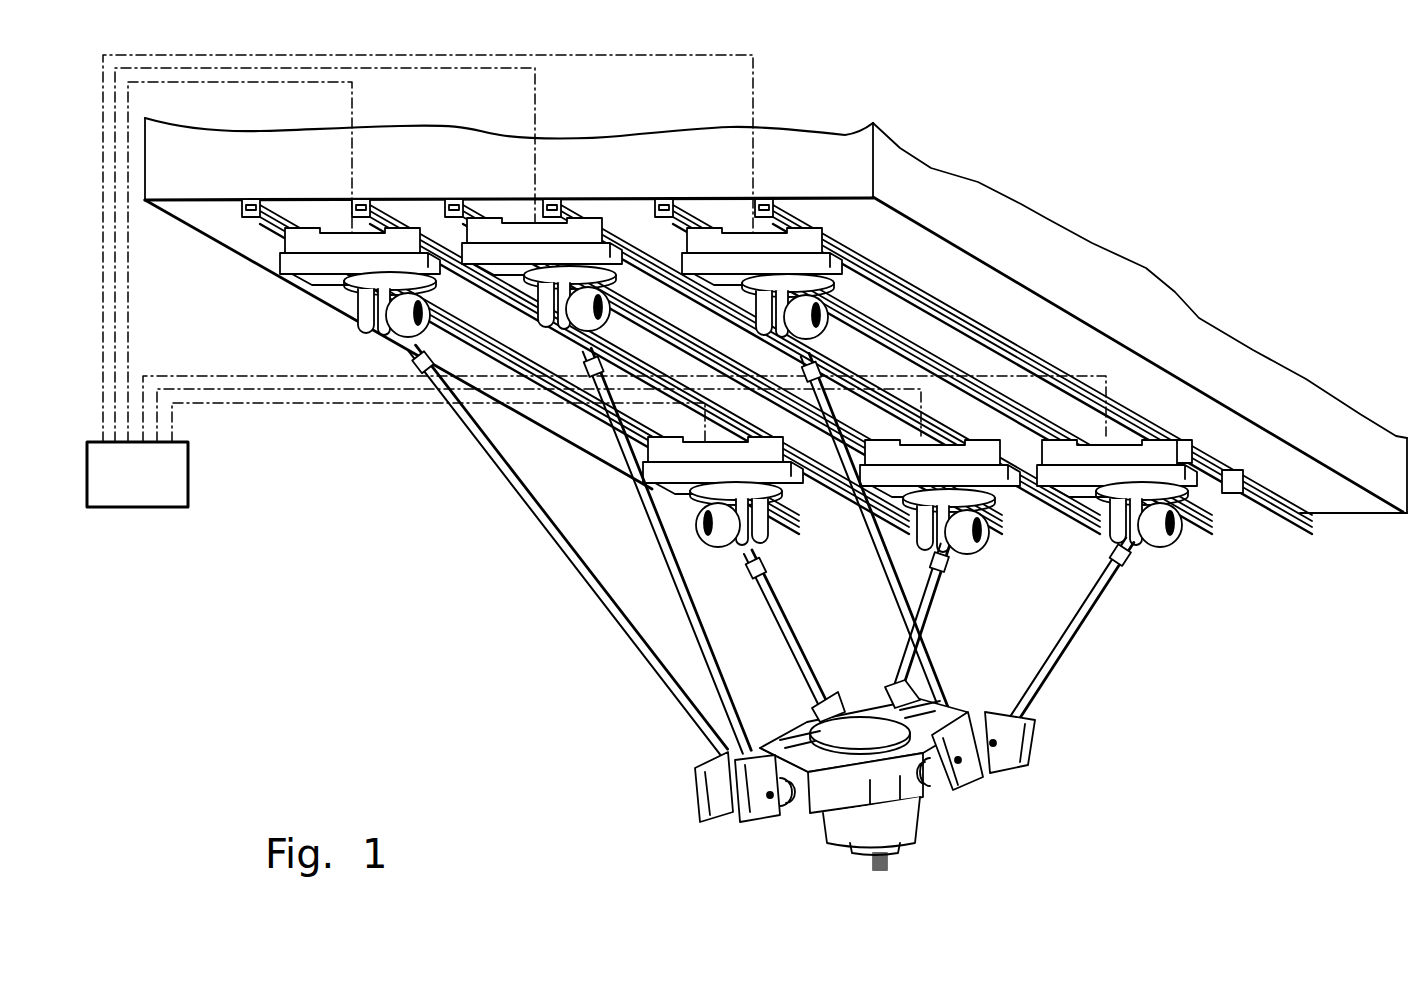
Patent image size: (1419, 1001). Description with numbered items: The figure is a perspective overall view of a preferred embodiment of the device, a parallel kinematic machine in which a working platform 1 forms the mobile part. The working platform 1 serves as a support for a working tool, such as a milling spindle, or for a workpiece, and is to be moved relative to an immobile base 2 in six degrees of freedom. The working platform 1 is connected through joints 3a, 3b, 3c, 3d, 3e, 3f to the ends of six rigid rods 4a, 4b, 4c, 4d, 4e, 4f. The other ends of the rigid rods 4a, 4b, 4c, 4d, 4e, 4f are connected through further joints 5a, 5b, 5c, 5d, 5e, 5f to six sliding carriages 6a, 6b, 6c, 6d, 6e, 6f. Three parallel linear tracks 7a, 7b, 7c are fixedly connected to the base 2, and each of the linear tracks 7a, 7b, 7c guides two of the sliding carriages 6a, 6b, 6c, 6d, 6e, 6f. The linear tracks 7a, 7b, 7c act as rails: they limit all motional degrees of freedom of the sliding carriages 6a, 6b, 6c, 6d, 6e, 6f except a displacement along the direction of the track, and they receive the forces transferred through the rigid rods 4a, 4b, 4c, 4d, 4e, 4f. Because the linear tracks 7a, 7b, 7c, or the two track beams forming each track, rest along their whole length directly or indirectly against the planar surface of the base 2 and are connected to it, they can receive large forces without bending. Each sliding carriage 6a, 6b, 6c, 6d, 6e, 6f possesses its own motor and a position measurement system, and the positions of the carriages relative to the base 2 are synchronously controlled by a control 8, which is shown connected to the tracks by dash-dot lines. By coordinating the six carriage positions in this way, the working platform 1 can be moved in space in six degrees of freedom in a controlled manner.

The working platform 1 is at (850, 790).
The base 2 is at (810, 147).
The joint 3a is at (772, 792).
The joint 3b is at (732, 788).
The joint 3c is at (815, 708).
The joint 3d is at (893, 688).
The joint 3e is at (993, 743).
The joint 3f is at (965, 780).
The rigid rod 4a is at (662, 523).
The rigid rod 4b is at (562, 560).
The rigid rod 4c is at (772, 598).
The rigid rod 4d is at (945, 590).
The rigid rod 4e is at (1075, 632).
The rigid rod 4f is at (877, 553).
The joint 5a is at (567, 290).
The joint 5b is at (365, 325).
The joint 5c is at (728, 535).
The joint 5d is at (970, 543).
The joint 5e is at (1160, 540).
The joint 5f is at (845, 322).
The sliding carriage 6a is at (605, 255).
The sliding carriage 6b is at (308, 268).
The sliding carriage 6c is at (797, 512).
The sliding carriage 6d is at (1025, 510).
The sliding carriage 6e is at (1222, 505).
The sliding carriage 6f is at (914, 279).
The linear track 7a is at (254, 200).
The linear track 7b is at (458, 200).
The linear track 7c is at (663, 200).
The control 8 is at (162, 495).